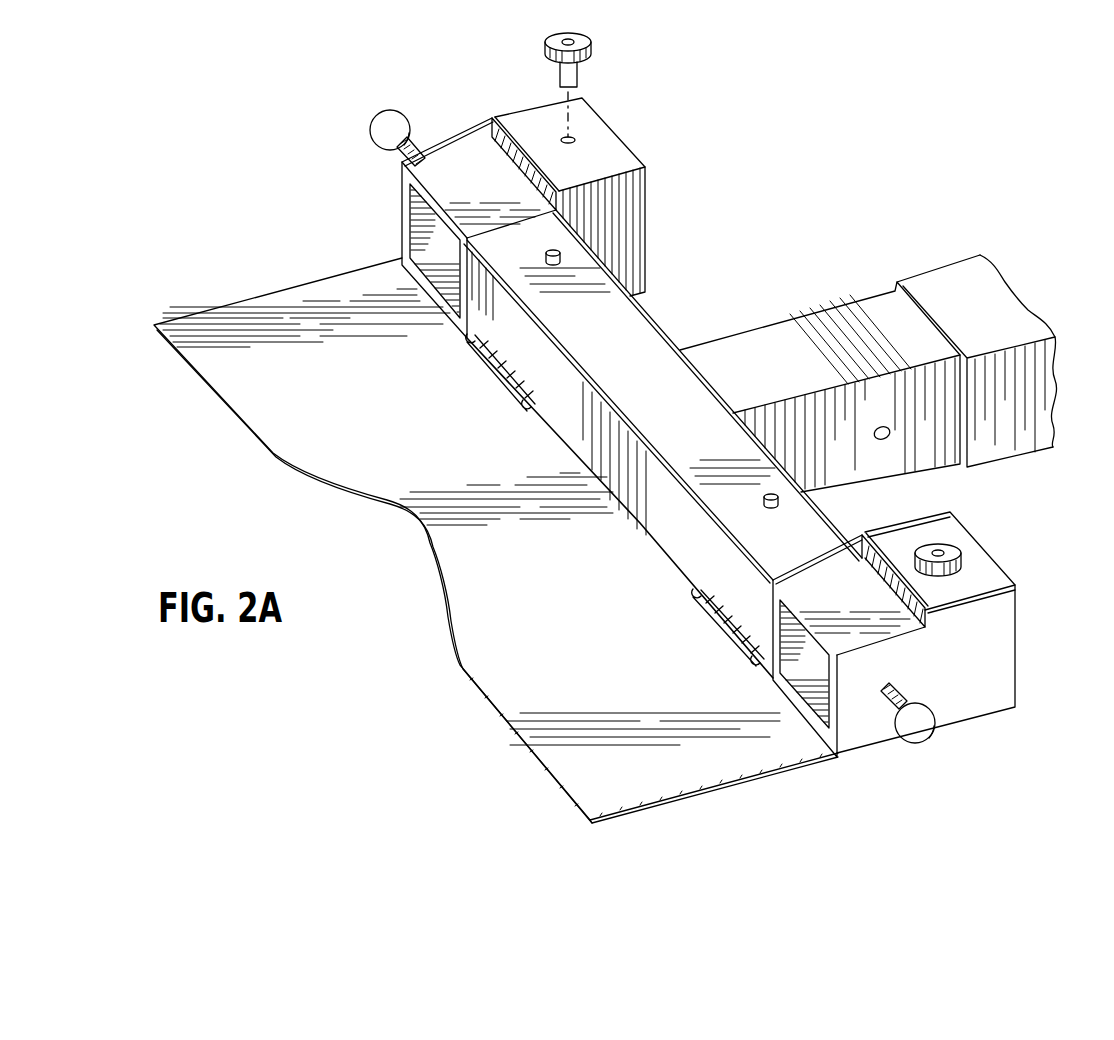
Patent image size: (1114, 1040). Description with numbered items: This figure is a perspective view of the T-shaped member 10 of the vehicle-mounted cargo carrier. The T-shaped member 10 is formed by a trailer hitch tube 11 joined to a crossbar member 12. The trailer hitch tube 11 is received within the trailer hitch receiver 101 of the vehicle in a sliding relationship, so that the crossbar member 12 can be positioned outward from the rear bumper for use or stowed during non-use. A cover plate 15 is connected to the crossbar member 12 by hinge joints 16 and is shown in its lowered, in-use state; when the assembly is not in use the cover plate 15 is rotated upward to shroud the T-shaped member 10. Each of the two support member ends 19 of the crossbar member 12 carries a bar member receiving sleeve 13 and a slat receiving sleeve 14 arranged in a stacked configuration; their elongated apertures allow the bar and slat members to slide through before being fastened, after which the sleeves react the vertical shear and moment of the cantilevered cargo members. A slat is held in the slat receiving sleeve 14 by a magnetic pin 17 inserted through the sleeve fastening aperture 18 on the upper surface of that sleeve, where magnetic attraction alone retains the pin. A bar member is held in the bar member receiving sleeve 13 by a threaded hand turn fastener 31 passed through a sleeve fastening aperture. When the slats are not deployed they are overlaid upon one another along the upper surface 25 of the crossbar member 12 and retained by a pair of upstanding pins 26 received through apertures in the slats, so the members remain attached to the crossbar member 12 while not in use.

The T-shaped member 10 is at (779, 224).
The trailer hitch tube 11 is at (770, 342).
The crossbar member 12 is at (645, 312).
The bar member receiving sleeve 13 is at (420, 232).
The slat receiving sleeve 14 is at (508, 143).
The cover plate 15 is at (453, 612).
The hinge joint 16 is at (487, 378).
The magnetic pin 17 is at (598, 42).
The sleeve fastening aperture 18 is at (574, 143).
The support member ends 19 is at (432, 87).
The upper surface of the crossbar member 25 is at (653, 380).
The upstanding pins 26 is at (560, 265).
The threaded hand turn fastener 31 is at (380, 128).
The trailer hitch receiver 101 is at (1037, 433).